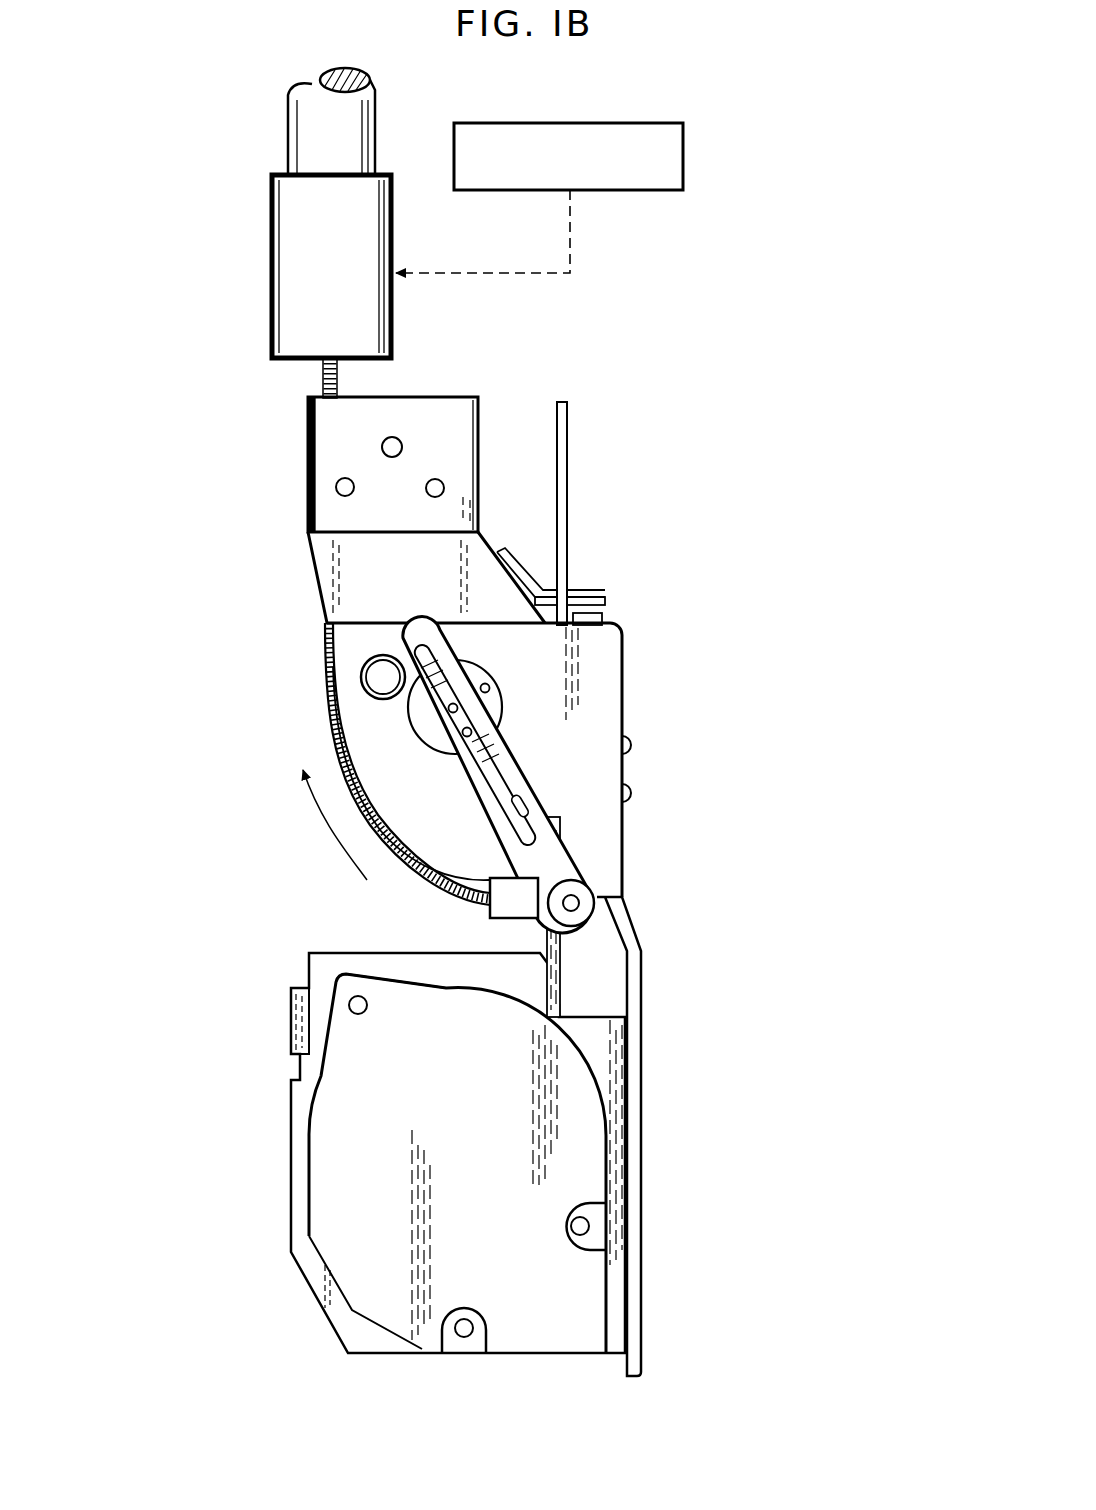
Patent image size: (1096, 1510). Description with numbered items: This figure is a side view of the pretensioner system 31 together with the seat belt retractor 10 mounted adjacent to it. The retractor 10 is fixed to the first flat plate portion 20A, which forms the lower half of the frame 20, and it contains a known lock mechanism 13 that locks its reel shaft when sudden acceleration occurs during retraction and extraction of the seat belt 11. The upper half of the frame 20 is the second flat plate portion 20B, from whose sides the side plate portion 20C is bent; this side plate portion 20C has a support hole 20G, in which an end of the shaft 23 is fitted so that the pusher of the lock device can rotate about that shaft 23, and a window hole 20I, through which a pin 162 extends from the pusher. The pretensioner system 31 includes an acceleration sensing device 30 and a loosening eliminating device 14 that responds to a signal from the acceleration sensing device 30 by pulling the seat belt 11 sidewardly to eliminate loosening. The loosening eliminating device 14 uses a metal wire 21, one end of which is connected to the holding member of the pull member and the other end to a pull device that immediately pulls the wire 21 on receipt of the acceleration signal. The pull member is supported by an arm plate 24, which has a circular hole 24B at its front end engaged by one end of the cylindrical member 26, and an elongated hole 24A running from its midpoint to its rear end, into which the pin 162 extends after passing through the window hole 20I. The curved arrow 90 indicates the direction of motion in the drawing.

The seat belt retractor 10 is at (283, 1115).
The seat belt 11 is at (567, 425).
The lock mechanism 13 is at (376, 988).
The loosening eliminating device 14 is at (456, 798).
The pin 162 is at (490, 718).
The frame 20 is at (643, 1112).
The first flat plate portion 20A is at (433, 847).
The second flat plate portion 20B is at (478, 413).
The side plate portion 20C is at (492, 692).
The support hole 20G is at (362, 680).
The window hole 20I is at (517, 770).
The metal wire 21 is at (323, 380).
The shaft 23 is at (362, 657).
The arm plate 24 is at (567, 840).
The elongated hole 24A is at (548, 817).
The circular hole 24B is at (585, 868).
The cylindrical member 26 is at (583, 932).
The acceleration sensing device 30 is at (647, 190).
The pretensioner system 31 is at (286, 499).
The rotation direction arrow 90 is at (322, 826).